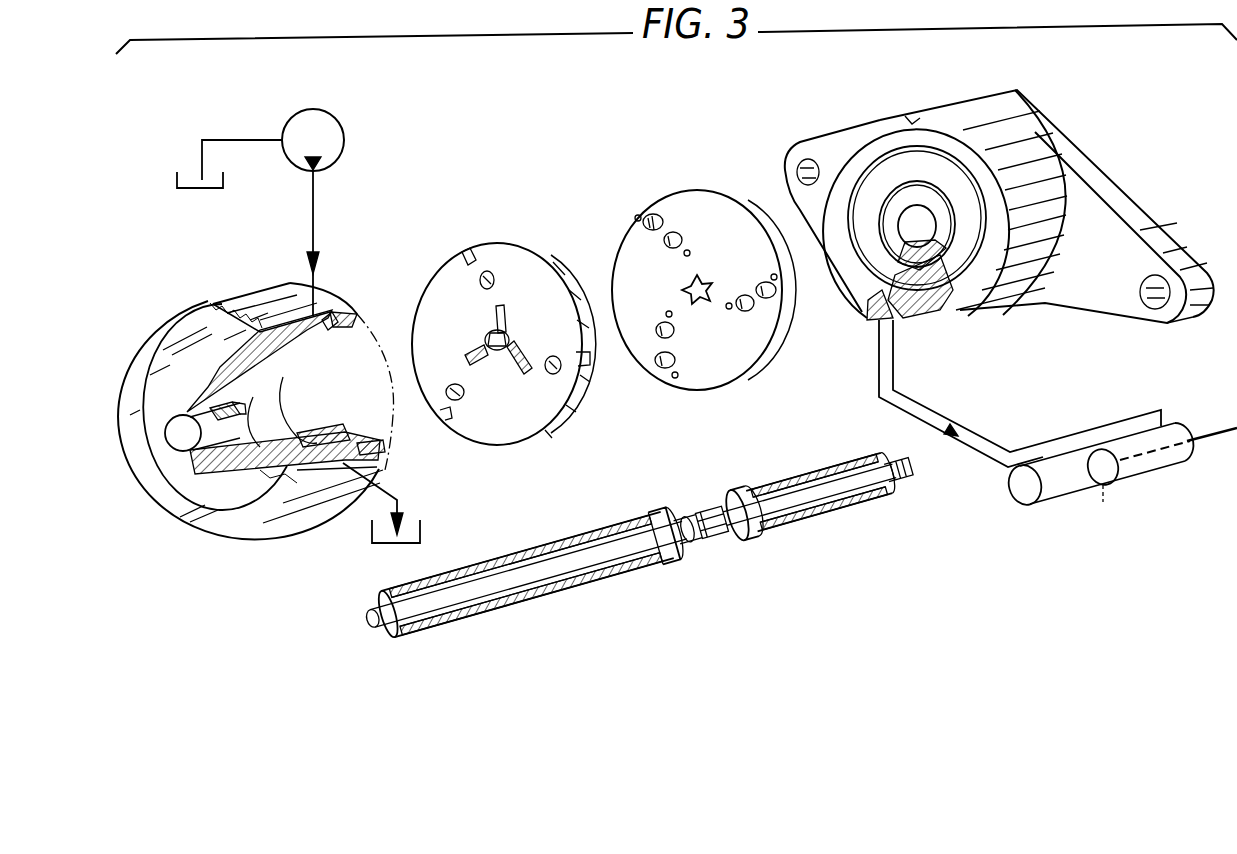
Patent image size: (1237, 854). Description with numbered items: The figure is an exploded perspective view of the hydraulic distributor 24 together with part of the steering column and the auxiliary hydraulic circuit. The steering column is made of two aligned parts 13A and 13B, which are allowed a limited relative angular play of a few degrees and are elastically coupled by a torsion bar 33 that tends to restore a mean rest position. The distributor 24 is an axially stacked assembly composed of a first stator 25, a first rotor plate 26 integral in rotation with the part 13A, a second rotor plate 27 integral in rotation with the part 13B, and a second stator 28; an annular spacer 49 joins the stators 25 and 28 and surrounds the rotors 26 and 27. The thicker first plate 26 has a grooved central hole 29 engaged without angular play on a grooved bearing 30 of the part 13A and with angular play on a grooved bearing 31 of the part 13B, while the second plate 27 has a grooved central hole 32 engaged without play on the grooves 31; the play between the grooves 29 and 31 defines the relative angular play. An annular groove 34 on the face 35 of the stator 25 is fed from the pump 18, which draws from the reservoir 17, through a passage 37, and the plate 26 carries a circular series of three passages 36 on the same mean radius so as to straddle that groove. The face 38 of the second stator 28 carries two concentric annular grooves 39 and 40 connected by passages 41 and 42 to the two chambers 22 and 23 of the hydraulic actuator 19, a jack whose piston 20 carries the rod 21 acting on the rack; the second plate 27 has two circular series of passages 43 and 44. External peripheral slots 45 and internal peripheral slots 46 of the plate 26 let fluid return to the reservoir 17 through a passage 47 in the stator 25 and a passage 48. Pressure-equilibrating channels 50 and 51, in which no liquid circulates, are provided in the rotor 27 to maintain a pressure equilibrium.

The steering column part 13A is at (538, 600).
The steering column part 13B is at (834, 522).
The reservoir 17 is at (200, 190).
The pump 18 is at (313, 109).
The hydraulic actuator 19 is at (1180, 461).
The piston 20 is at (1103, 486).
The rod 21 is at (1217, 433).
The chamber 22 is at (1062, 493).
The chamber 23 is at (1144, 468).
The distributor 24 is at (1090, 135).
The first stator 25 is at (262, 290).
The first rotor plate 26 is at (440, 262).
The second rotor plate 27 is at (722, 193).
The second stator 28 is at (884, 122).
The grooved central hole 29 is at (505, 332).
The grooved bearing 30 is at (688, 512).
The grooved bearing 31 is at (707, 505).
The grooved central hole 32 is at (706, 283).
The torsion bar 33 is at (640, 560).
The annular groove 34 is at (325, 430).
The face 35 is at (335, 338).
The passages 36 is at (480, 284).
The passage 37 is at (316, 226).
The face 38 is at (908, 116).
The annular groove 39 is at (862, 272).
The annular groove 40 is at (886, 210).
The passage 41 is at (878, 361).
The passage 42 is at (895, 359).
The passages 43 is at (655, 214).
The passages 44 is at (677, 233).
The external peripheral slots 45 is at (472, 250).
The internal peripheral slots 46 is at (492, 321).
The passage 47 is at (287, 443).
The passage 48 is at (397, 500).
The annular spacer 49 is at (347, 296).
The pressure-equilibrating channel 50 is at (635, 220).
The pressure-equilibrating channel 51 is at (684, 256).